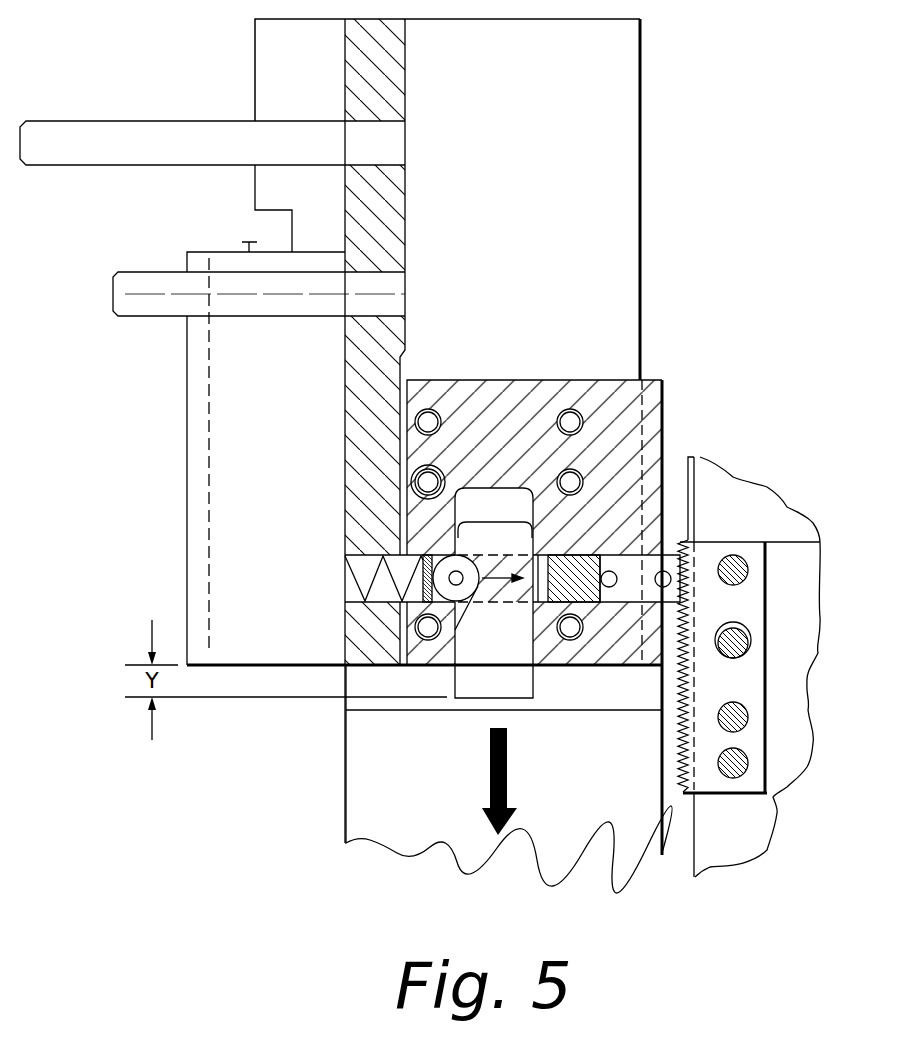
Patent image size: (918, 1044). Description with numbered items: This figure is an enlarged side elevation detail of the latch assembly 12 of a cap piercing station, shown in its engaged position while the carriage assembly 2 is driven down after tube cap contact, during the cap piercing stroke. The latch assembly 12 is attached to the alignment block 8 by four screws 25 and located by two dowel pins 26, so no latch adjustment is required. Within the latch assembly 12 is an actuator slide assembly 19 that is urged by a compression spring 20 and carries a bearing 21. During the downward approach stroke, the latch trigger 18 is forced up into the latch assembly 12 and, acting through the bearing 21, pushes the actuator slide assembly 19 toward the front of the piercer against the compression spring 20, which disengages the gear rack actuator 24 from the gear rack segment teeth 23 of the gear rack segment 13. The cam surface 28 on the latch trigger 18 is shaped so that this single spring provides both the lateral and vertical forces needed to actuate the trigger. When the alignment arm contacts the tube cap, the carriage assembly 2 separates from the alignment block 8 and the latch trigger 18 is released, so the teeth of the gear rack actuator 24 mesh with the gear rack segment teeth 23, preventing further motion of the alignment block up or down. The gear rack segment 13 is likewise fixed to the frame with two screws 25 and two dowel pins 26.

The carriage assembly 2 is at (345, 778).
The alignment block 8 is at (642, 293).
The latch assembly 12 is at (476, 380).
The gear rack segment 13 is at (767, 600).
The latch trigger 18 is at (520, 698).
The actuator slide assembly 19 is at (585, 553).
The compression spring 20 is at (348, 583).
The bearing 21 is at (440, 554).
The gear rack segment teeth 23 is at (682, 795).
The gear rack actuator 24 is at (680, 543).
The screws 25 is at (570, 410).
The dowel pins 26 is at (557, 473).
The cam surface 28 is at (453, 610).